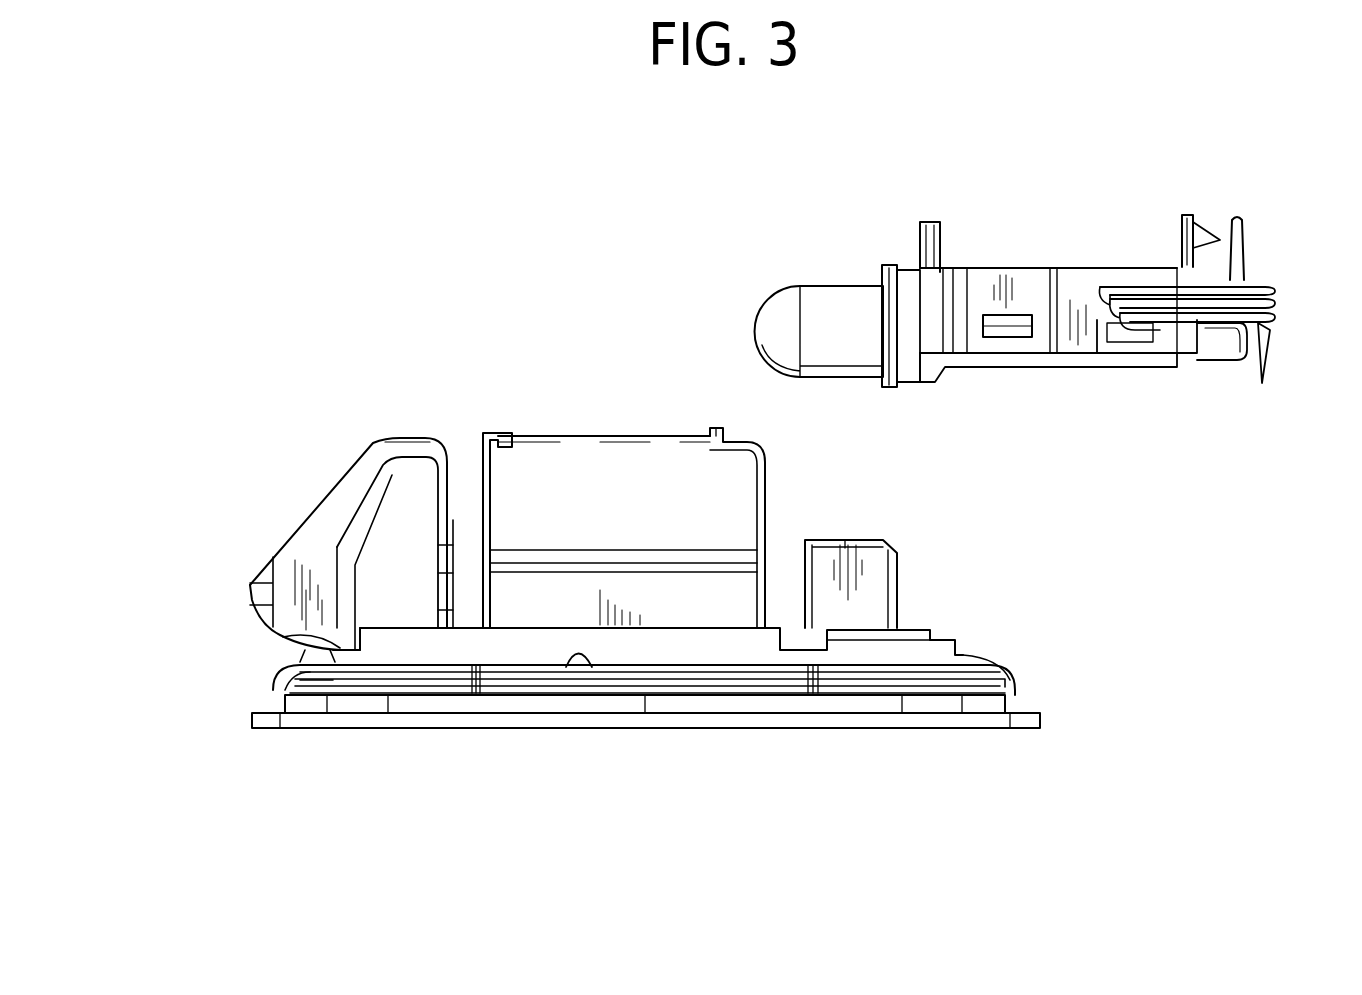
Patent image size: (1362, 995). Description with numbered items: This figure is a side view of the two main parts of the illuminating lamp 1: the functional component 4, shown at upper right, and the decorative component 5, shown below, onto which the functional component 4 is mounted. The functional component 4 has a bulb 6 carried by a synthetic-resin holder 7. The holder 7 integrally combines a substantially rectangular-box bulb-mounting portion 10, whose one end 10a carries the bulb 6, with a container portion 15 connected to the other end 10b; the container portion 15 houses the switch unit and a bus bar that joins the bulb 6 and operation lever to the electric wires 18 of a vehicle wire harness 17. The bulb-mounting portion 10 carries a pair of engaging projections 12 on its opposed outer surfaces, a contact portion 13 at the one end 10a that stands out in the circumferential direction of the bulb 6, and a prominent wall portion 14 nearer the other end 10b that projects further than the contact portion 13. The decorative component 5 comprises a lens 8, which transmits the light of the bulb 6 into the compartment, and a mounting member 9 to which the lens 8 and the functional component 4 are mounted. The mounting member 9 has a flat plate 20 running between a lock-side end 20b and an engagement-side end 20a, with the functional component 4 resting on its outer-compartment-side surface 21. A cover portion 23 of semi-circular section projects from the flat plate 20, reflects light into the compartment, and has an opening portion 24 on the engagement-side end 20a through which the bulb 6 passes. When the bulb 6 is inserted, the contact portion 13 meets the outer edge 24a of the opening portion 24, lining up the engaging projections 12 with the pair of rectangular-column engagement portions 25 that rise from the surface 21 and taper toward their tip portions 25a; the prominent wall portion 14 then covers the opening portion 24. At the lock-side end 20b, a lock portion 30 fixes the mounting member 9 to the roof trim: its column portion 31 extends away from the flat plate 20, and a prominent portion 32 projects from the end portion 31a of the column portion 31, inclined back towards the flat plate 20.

The illuminating lamp 1 is at (583, 228).
The functional component 4 is at (1160, 195).
The decorative component 5 is at (470, 355).
The bulb 6 is at (815, 278).
The holder 7 is at (1120, 140).
The lens 8 is at (893, 735).
The mounting member 9 is at (805, 715).
The bulb-mounting portion 10 is at (1003, 265).
The one end of the bulb-mounting portion 10a is at (935, 378).
The other end of the bulb-mounting portion 10b is at (1050, 362).
The engaging projection 12 is at (1008, 340).
The contact portion 13 is at (888, 265).
The prominent wall portion 14 is at (928, 225).
The container portion 15 is at (1092, 262).
The wire harness 17 is at (1260, 283).
The electric wires 18 is at (1262, 362).
The flat plate 20 is at (720, 700).
The engagement-side end 20a is at (975, 668).
The lock-side end 20b is at (335, 657).
The surface of the flat plate 21 is at (578, 660).
The cover portion 23 is at (585, 455).
The opening portion 24 is at (770, 520).
The outer edge of the opening portion 24a is at (730, 428).
The engagement portion 25 is at (898, 570).
The tip portion 25a is at (855, 550).
The lock portion 30 is at (322, 492).
The column portion 31 is at (454, 520).
The end portion of the column portion 31a is at (400, 437).
The prominent portion 32 is at (300, 548).